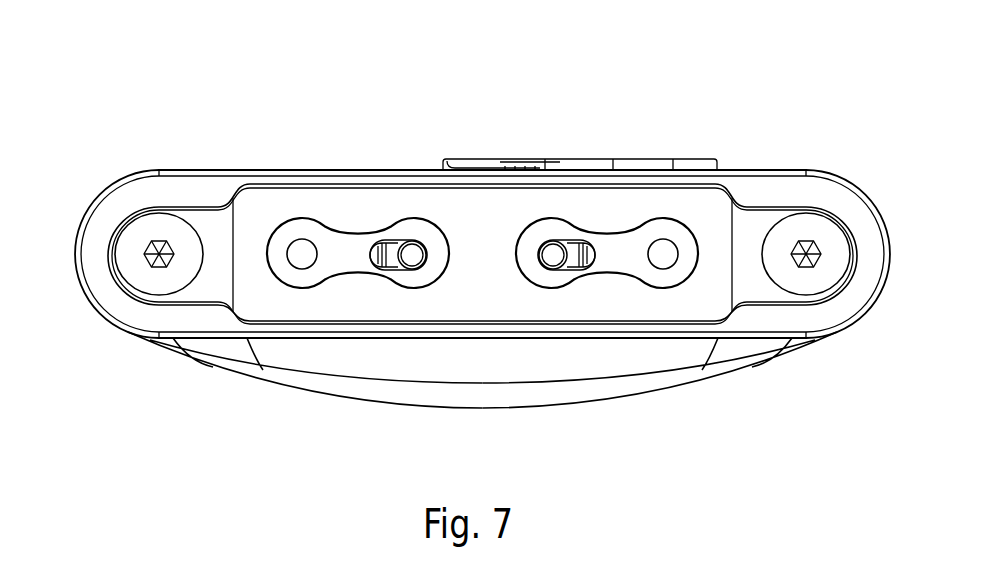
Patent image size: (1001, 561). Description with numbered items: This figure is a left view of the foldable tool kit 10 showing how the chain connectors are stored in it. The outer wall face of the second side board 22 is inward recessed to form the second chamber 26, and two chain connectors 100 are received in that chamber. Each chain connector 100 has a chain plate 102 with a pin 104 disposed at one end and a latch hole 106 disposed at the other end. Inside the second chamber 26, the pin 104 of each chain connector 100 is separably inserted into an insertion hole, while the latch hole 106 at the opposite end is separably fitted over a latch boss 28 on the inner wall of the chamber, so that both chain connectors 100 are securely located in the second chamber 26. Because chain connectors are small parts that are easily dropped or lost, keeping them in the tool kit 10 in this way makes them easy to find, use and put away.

The foldable tool kit 10 is at (110, 152).
The second side board 22 is at (855, 214).
The second chamber 26 is at (510, 216).
The latch boss 28 is at (412, 255).
The chain connector 100 is at (343, 223).
The chain plate 102 is at (373, 232).
The pin 104 is at (305, 247).
The latch hole 106 is at (372, 266).